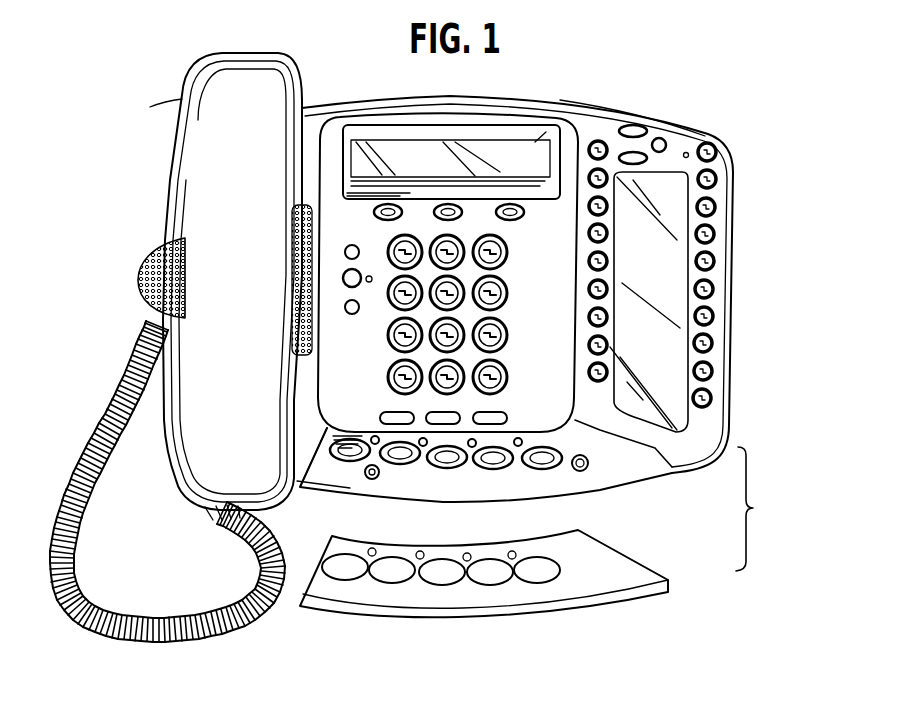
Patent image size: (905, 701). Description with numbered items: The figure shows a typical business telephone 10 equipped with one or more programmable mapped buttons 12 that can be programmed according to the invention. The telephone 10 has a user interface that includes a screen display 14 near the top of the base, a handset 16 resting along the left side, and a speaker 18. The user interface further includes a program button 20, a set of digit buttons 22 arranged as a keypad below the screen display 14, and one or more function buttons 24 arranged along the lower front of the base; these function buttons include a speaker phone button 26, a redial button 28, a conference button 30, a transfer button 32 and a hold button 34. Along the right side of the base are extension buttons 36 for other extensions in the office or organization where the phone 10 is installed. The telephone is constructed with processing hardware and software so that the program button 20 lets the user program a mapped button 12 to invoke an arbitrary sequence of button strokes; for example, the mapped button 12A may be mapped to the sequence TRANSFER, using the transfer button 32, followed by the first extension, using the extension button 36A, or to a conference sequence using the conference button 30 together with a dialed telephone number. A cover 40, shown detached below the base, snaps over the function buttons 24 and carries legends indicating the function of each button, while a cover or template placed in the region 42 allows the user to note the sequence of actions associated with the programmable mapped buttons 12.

The business telephone 10 is at (118, 184).
The programmable mapped button 12 is at (620, 248).
The mapped button 12A is at (612, 114).
The screen display 14 is at (520, 140).
The handset 16 is at (186, 102).
The speaker 18 is at (147, 307).
The program button 20 is at (716, 148).
The digit buttons 22 is at (513, 293).
The function buttons 24 is at (299, 505).
The speaker phone button 26 is at (340, 463).
The redial button 28 is at (400, 465).
The conference button 30 is at (447, 468).
The transfer button 32 is at (494, 469).
The hold button 34 is at (542, 469).
The extension buttons 36 is at (739, 271).
The extension button 36A is at (716, 177).
The cover 40 is at (463, 616).
The region 42 is at (673, 286).